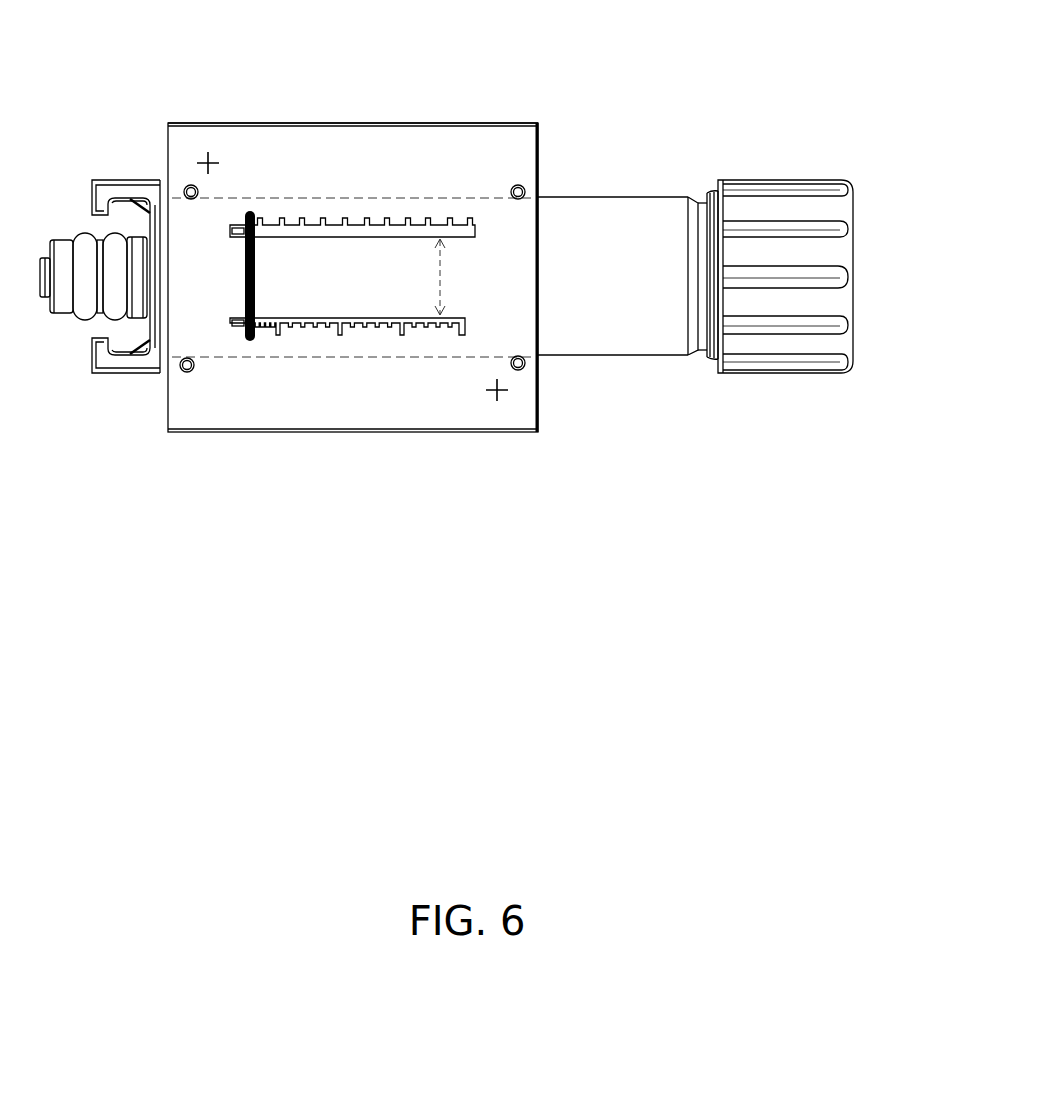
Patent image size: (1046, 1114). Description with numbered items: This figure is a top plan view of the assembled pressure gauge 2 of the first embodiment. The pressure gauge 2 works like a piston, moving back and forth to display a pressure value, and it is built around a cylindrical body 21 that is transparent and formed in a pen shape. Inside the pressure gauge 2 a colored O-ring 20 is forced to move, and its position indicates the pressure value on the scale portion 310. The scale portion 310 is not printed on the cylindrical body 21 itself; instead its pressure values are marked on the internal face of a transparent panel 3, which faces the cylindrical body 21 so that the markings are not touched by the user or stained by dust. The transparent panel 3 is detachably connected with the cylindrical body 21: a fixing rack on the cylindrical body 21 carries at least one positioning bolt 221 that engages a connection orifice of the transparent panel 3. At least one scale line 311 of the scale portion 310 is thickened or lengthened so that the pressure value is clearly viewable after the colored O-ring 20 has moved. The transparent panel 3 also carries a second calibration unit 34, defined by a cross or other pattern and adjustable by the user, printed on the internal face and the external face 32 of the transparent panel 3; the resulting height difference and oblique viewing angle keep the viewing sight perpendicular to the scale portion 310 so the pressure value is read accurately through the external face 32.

The pressure gauge 2 is at (392, 458).
The cylindrical body 21 is at (638, 338).
The positioning bolt 221 is at (187, 373).
The transparent panel 3 is at (338, 150).
The external face 32 is at (525, 133).
The second calibration unit 34 is at (168, 132).
The colored O-ring 20 is at (247, 211).
The scale portion 310 is at (427, 172).
The scale line 311 is at (400, 324).